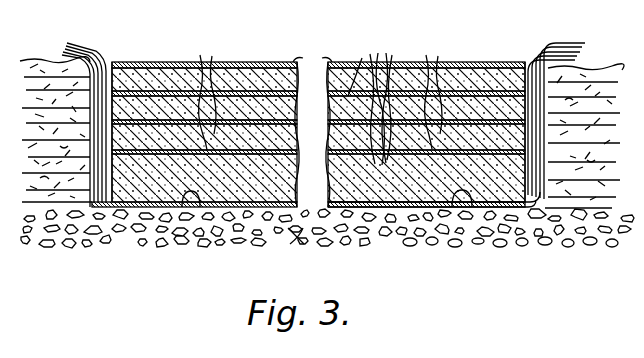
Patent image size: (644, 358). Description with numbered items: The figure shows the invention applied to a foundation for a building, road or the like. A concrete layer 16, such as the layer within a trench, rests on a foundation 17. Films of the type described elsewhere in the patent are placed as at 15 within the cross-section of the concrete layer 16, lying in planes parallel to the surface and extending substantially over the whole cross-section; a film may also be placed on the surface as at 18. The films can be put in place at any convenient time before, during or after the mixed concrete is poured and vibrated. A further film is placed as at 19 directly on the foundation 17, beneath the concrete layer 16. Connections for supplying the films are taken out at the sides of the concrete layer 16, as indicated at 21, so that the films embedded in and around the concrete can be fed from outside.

The films placed within the cross-section 15 is at (317, 92).
The concrete layer 16 is at (370, 98).
The foundation 17 is at (296, 240).
The film on the surface 18 is at (312, 119).
The film on the foundation 19 is at (190, 204).
The connections 21 is at (74, 44).